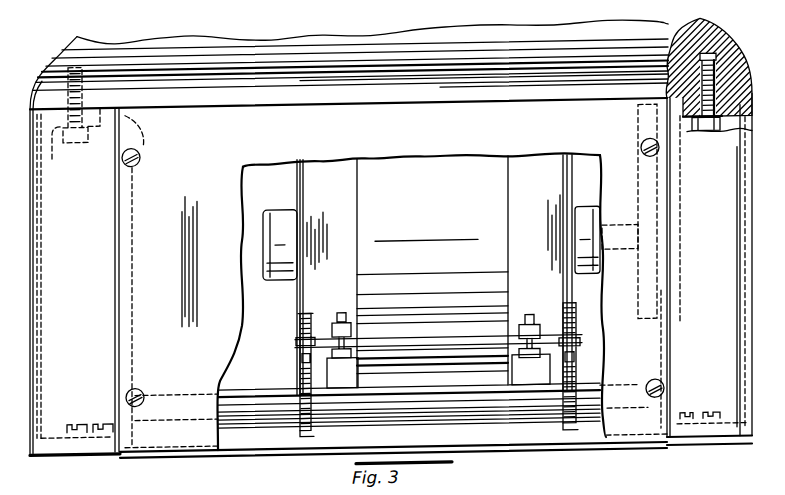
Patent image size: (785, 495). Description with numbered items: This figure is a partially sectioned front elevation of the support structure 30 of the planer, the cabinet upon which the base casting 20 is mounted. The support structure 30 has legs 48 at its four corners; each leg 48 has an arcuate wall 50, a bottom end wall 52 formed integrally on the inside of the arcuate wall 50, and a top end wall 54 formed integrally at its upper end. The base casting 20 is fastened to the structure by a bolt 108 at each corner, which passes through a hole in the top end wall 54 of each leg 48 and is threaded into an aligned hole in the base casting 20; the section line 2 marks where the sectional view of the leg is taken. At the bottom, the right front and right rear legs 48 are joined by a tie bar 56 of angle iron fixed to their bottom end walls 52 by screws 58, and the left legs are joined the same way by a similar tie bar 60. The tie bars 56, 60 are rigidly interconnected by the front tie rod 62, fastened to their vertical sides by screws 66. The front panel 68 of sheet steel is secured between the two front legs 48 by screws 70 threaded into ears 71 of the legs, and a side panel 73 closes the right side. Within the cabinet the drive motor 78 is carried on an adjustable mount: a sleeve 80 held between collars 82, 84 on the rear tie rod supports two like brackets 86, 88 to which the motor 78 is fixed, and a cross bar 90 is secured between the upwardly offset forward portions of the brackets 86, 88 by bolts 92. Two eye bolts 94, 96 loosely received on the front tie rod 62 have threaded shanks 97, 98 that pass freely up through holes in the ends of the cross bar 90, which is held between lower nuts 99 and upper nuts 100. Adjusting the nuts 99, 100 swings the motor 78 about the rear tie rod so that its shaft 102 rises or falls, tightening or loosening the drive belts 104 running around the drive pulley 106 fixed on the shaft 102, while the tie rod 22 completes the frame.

The base casting 20 is at (242, 46).
The bolt 108 is at (92, 83).
The section line 2 is at (30, 112).
The leg 48 is at (108, 230).
The support structure 30 is at (208, 460).
The top end wall 54 is at (738, 136).
The arcuate wall 50 is at (722, 287).
The screws 70 is at (142, 156).
The ears 71 is at (141, 158).
The drive belts 104 is at (638, 138).
The shaft 102 is at (683, 246).
The drive pulley 106 is at (683, 281).
The panel 68 is at (235, 194).
The drive motor 78 is at (449, 171).
The cross bar 90 is at (438, 345).
The threaded shank 98 is at (566, 320).
The upper nuts 100 is at (297, 342).
The threaded shank 97 is at (300, 322).
The lower nuts 99 is at (297, 360).
The eye bolt 94 is at (302, 406).
The collar 84 is at (318, 438).
The eye bolt 96 is at (580, 420).
The bolts 92 is at (348, 339).
The bracket 88 is at (358, 385).
The bracket 86 is at (517, 379).
The front tie rod 62 is at (428, 421).
The sleeve 80 is at (463, 428).
The collar 82 is at (563, 427).
The screws 66 is at (110, 399).
The screws 58 is at (98, 425).
The bottom end wall 52 is at (80, 421).
The tie bar 56 is at (710, 436).
The tie bar 60 is at (85, 417).
The floor 22 is at (99, 491).
The panel 73 is at (151, 491).